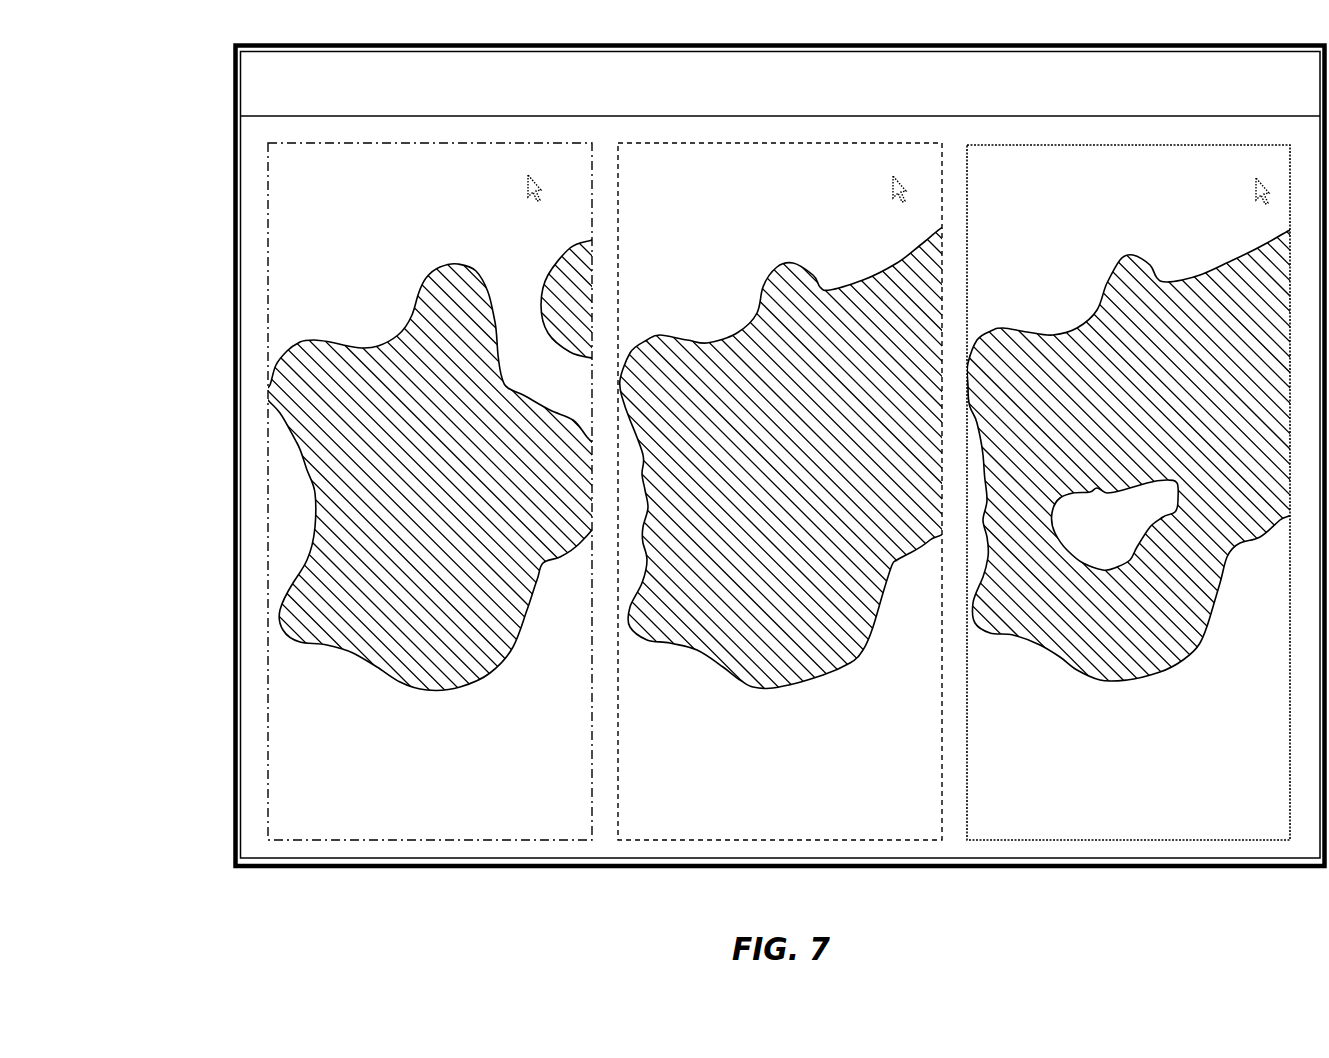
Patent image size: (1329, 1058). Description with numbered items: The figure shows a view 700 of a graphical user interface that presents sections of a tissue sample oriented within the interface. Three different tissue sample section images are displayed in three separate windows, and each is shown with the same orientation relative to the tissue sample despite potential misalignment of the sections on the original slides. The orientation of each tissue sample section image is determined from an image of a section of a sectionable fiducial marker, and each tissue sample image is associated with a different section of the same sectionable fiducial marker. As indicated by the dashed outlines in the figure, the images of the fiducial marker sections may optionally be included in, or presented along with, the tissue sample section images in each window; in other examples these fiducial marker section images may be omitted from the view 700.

The view of a graphical user interface 700 is at (153, 95).